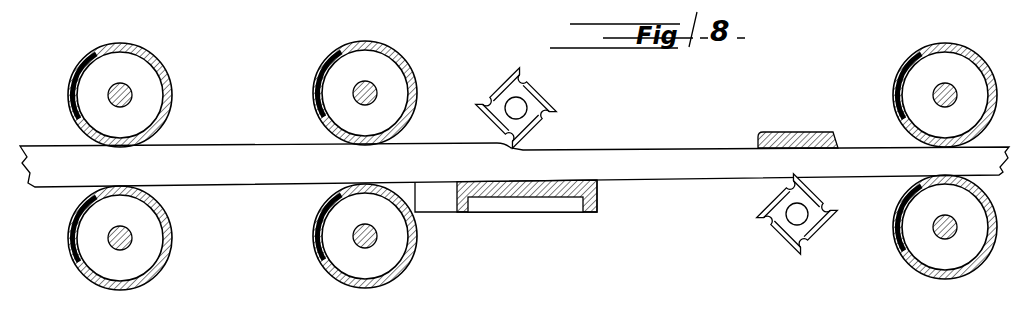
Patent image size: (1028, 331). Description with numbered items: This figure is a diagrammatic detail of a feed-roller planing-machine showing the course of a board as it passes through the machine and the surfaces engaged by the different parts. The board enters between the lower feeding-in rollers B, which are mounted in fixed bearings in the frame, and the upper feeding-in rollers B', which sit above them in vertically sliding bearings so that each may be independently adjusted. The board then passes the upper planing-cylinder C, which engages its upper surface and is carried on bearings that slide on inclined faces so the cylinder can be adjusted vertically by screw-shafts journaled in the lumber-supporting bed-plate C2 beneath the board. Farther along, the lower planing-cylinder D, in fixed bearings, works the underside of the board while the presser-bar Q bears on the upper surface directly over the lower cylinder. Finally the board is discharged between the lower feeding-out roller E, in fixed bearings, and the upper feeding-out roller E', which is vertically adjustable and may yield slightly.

The lower feeding-in rollers B is at (258, 237).
The upper feeding-in rollers B' is at (261, 94).
The upper planing-cylinder C is at (523, 95).
The lumber-supporting bed-plate C2 is at (515, 197).
The lower planing-cylinder D is at (763, 201).
The lower feeding-out roller E is at (918, 227).
The upper feeding-out roller E' is at (920, 95).
The presser-bar Q is at (798, 123).